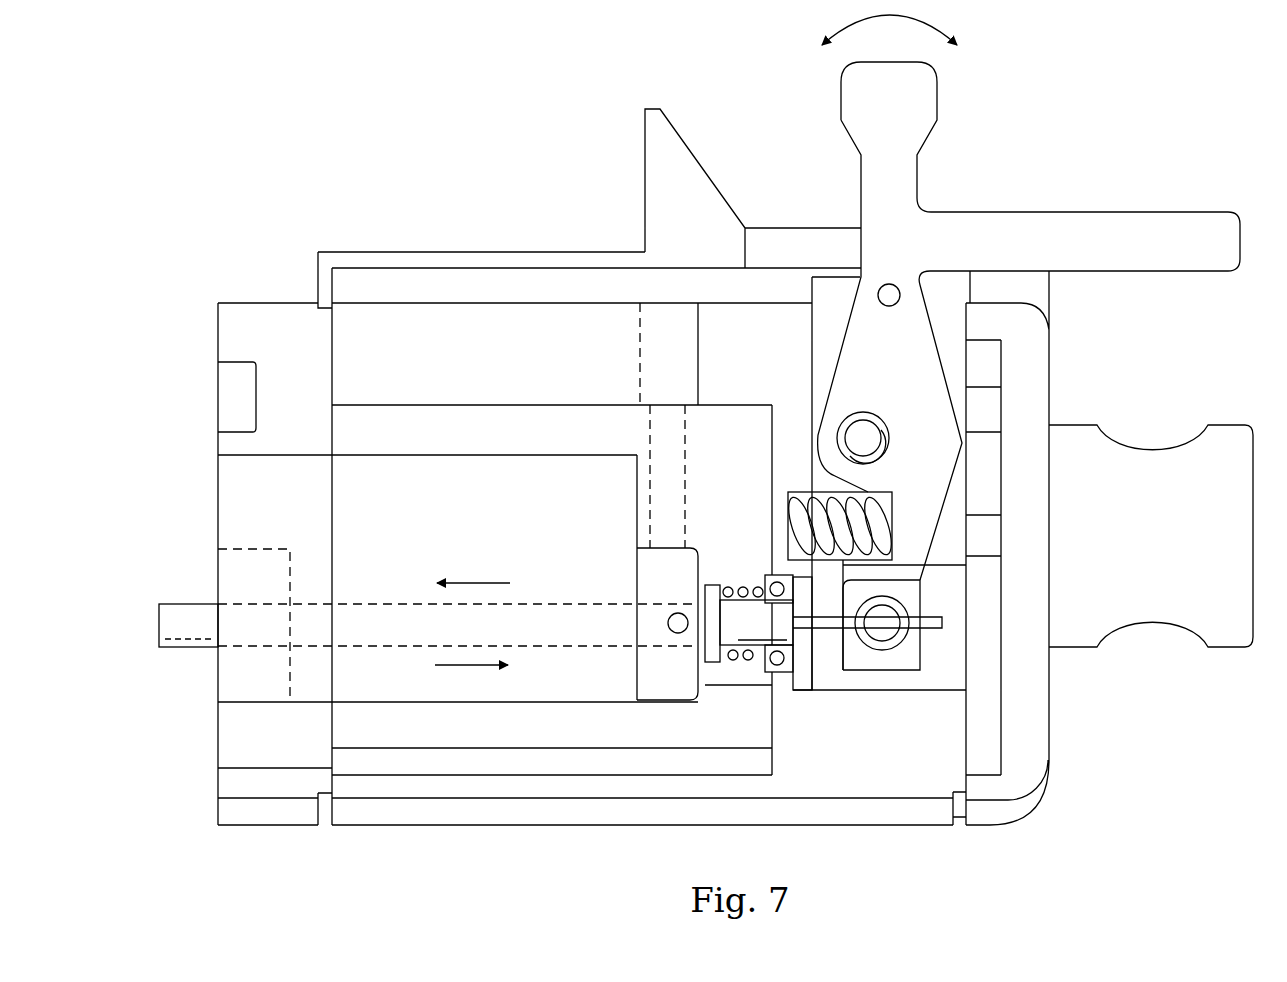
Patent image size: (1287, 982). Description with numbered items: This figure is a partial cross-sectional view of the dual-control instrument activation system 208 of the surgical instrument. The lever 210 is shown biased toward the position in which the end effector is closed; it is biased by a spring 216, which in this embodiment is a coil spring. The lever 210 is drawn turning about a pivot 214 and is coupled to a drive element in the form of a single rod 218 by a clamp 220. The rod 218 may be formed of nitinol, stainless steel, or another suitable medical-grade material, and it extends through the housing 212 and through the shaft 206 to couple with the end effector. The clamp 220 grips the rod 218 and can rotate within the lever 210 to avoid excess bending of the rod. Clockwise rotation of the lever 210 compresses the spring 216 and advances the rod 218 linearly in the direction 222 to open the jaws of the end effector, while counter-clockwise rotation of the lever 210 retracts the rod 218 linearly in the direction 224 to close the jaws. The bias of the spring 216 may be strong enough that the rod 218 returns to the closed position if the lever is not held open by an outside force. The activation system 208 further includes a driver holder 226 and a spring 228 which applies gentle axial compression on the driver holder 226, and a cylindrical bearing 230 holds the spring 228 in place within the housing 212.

The shaft 206 is at (182, 603).
The dual-control instrument activation system 208 is at (1117, 100).
The lever 210 is at (938, 98).
The housing 212 is at (385, 250).
The pivot 214 is at (865, 414).
The spring 216 is at (890, 504).
The rod 218 is at (830, 630).
The clamp 220 is at (882, 650).
The direction 222 is at (456, 580).
The direction 224 is at (462, 668).
The driver holder 226 is at (715, 640).
The spring 228 is at (742, 585).
The cylindrical bearing 230 is at (783, 673).